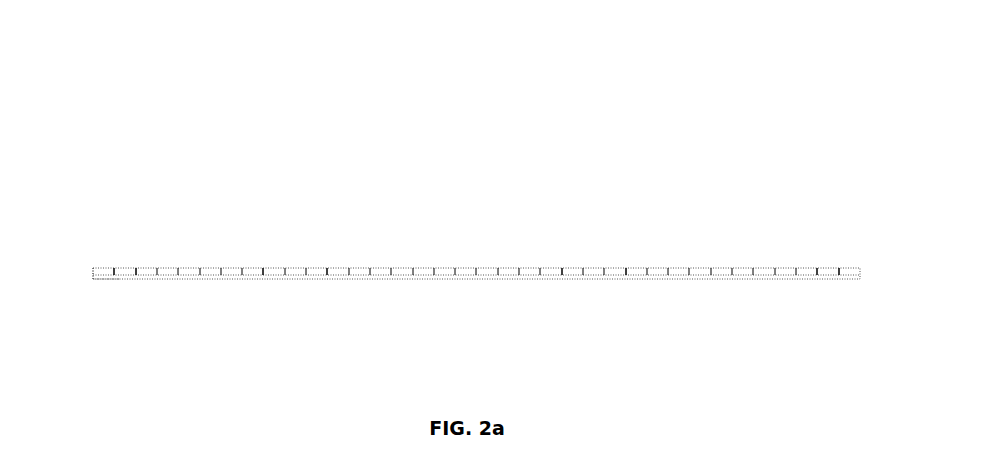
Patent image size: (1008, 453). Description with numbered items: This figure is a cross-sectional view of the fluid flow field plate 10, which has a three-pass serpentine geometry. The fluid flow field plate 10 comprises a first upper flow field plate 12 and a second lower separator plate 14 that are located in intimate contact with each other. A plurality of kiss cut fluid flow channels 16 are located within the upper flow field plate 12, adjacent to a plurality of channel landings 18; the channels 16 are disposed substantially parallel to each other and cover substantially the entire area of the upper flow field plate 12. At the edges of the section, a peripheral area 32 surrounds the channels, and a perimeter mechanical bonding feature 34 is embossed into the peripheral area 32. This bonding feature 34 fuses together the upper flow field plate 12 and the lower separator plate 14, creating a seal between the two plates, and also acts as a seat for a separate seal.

The fluid flow field plate 10 is at (808, 72).
The first upper flow field plate 12 is at (92, 277).
The second lower separator plate 14 is at (105, 282).
The kiss cut fluid flow channels 16 is at (262, 285).
The channel landings 18 is at (325, 278).
The peripheral area 32 is at (140, 278).
The perimeter mechanical bonding feature 34 is at (113, 278).